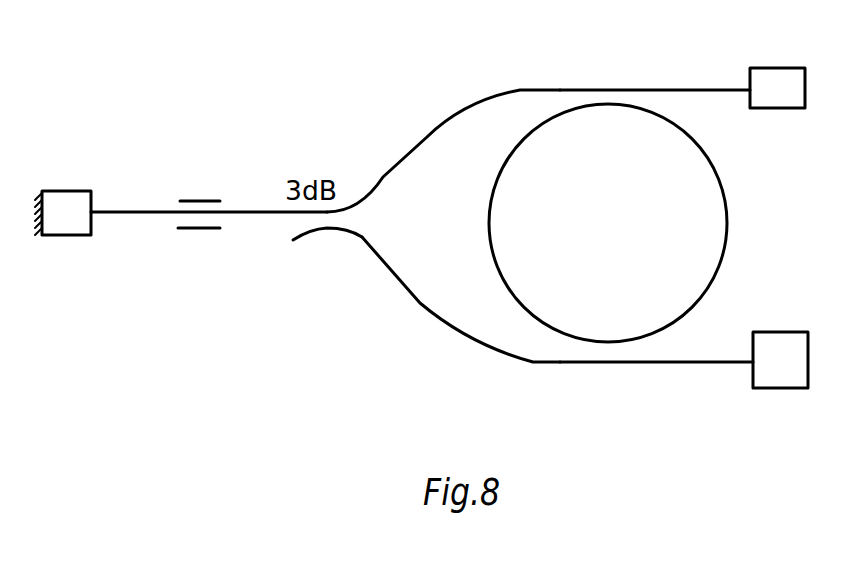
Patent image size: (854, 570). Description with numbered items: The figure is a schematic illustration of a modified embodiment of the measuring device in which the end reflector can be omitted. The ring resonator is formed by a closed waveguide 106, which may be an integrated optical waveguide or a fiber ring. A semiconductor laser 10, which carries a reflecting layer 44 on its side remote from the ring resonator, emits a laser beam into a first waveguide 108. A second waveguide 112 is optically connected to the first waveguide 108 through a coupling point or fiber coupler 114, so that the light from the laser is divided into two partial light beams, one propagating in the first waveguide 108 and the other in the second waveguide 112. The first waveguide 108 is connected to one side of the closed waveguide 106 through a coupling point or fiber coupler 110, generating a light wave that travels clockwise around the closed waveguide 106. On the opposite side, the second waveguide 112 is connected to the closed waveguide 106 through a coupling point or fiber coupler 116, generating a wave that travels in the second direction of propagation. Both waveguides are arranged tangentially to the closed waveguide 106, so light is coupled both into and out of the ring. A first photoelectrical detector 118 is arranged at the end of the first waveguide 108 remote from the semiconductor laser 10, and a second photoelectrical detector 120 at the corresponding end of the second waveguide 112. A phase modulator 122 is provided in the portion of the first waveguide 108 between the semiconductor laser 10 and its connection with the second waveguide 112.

The semiconductor laser 10 is at (75, 205).
The reflecting layer 44 is at (37, 200).
The phase modulator 122 is at (190, 231).
The first waveguide 108 is at (433, 128).
The fiber coupler 110 is at (622, 88).
The first photoelectrical detector 118 is at (780, 83).
The fiber coupler 114 is at (316, 232).
The second waveguide 112 is at (420, 303).
The fiber coupler 116 is at (623, 365).
The second photoelectrical detector 120 is at (787, 342).
The closed waveguide 106 is at (728, 212).